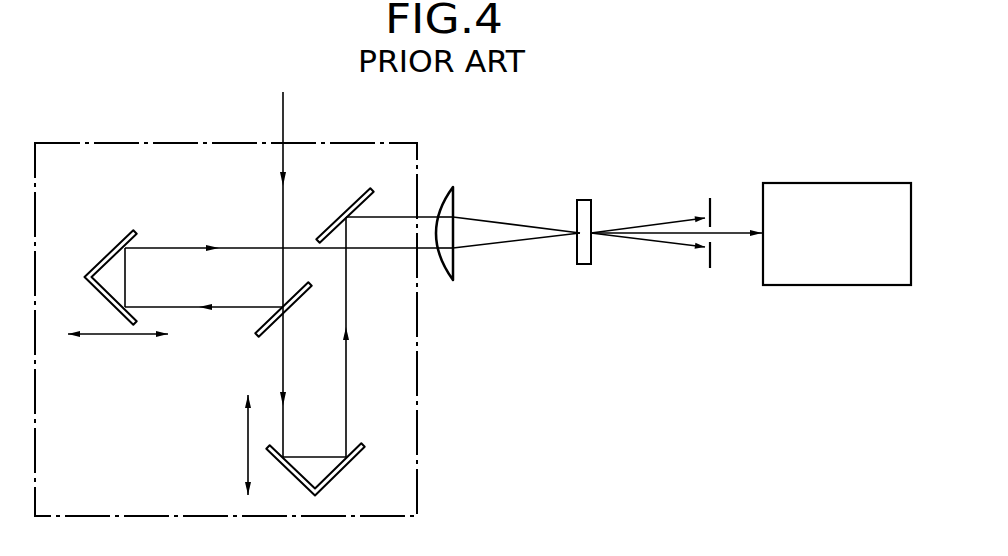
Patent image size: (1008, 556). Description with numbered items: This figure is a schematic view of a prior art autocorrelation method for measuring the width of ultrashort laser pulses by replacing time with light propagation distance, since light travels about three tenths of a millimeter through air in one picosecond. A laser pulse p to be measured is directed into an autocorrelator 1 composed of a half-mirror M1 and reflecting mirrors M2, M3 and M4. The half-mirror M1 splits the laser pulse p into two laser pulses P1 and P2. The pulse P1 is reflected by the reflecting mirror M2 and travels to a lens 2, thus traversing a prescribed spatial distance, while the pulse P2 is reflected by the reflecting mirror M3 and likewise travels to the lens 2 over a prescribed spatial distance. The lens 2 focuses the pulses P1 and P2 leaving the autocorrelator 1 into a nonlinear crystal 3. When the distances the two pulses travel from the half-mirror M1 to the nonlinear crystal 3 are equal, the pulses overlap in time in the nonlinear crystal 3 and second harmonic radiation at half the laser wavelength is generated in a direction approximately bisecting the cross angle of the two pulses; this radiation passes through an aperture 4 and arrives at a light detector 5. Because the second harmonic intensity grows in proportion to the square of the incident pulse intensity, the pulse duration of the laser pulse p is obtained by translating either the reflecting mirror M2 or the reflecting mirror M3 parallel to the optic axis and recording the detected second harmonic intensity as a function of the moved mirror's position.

The autocorrelator 1 is at (340, 143).
The lens 2 is at (455, 193).
The nonlinear crystal 3 is at (586, 266).
The aperture 4 is at (718, 200).
The light detector 5 is at (836, 183).
The laser pulse p is at (294, 271).
The laser pulse p1 P1 is at (281, 261).
The laser pulse p2 P2 is at (360, 337).
The half-mirror M1 is at (264, 322).
The reflecting mirror M2 is at (102, 261).
The reflecting mirror M3 is at (338, 470).
The reflecting mirror M4 is at (349, 203).